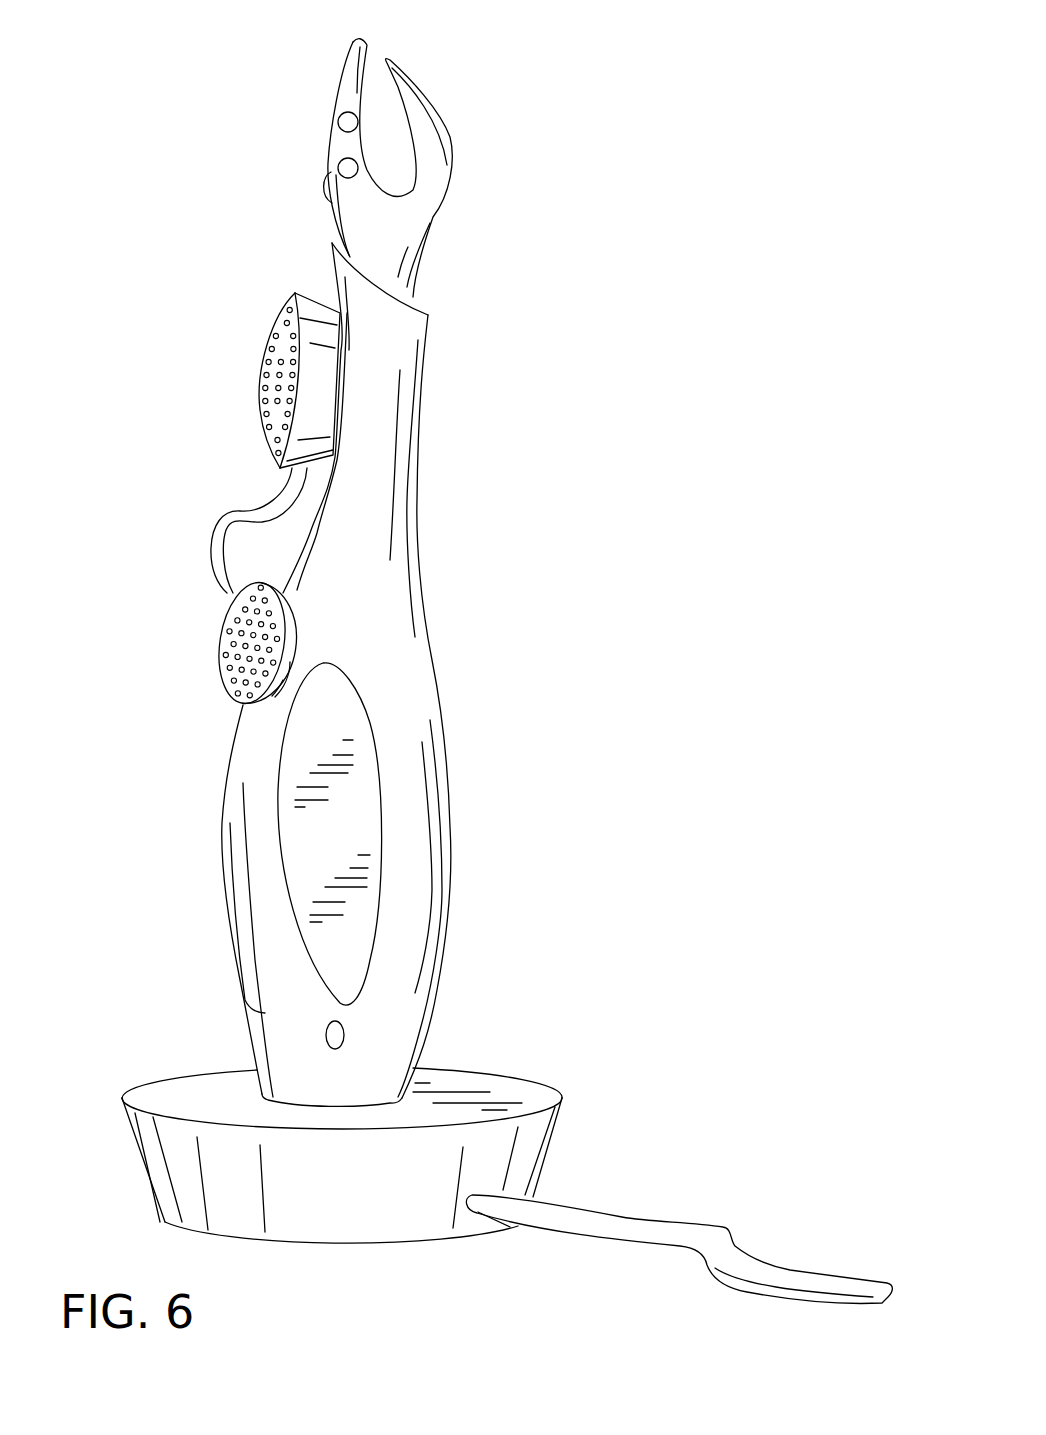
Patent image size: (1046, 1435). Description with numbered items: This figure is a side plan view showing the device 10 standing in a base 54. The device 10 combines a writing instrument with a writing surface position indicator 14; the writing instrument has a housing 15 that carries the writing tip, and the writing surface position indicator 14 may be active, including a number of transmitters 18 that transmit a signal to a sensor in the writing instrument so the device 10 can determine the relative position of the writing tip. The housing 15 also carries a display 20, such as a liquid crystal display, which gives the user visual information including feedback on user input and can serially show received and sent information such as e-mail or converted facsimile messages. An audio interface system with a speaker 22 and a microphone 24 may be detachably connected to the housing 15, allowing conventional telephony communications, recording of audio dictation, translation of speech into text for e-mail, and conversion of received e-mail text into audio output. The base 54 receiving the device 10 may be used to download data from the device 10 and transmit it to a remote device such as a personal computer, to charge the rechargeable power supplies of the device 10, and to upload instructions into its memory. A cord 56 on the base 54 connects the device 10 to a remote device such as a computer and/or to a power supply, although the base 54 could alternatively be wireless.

The device 10 is at (605, 180).
The writing surface position indicator 14 is at (430, 195).
The housing 15 is at (400, 490).
The transmitters 18 is at (326, 1043).
The display 20 is at (352, 843).
The speaker 22 is at (220, 625).
The microphone 24 is at (263, 350).
The base 54 is at (477, 1082).
The cord 56 is at (622, 1217).